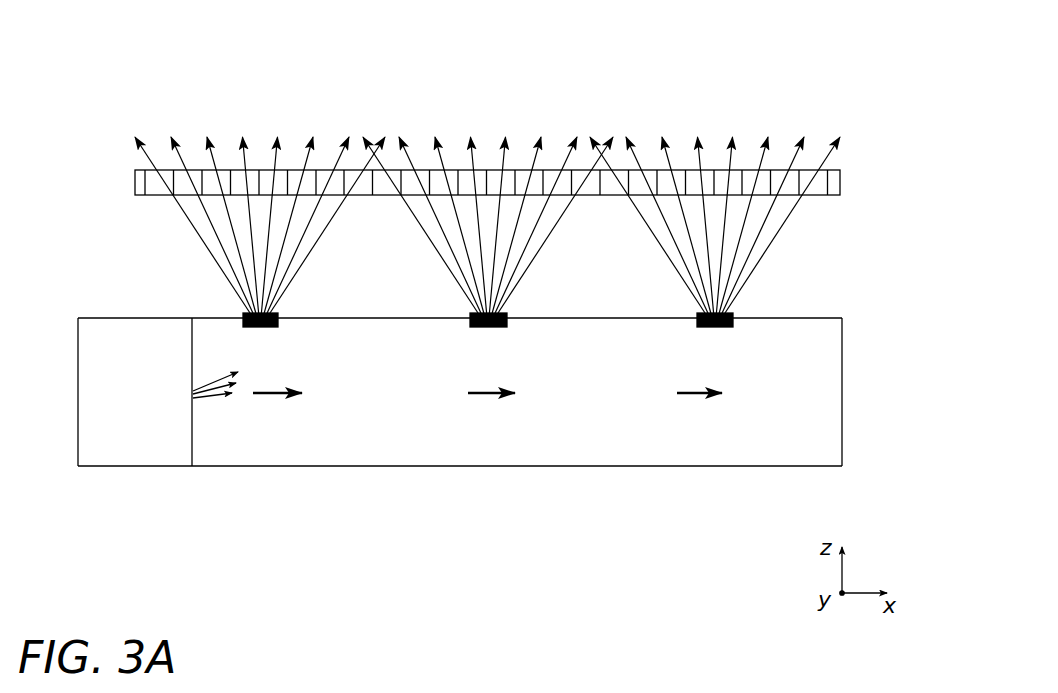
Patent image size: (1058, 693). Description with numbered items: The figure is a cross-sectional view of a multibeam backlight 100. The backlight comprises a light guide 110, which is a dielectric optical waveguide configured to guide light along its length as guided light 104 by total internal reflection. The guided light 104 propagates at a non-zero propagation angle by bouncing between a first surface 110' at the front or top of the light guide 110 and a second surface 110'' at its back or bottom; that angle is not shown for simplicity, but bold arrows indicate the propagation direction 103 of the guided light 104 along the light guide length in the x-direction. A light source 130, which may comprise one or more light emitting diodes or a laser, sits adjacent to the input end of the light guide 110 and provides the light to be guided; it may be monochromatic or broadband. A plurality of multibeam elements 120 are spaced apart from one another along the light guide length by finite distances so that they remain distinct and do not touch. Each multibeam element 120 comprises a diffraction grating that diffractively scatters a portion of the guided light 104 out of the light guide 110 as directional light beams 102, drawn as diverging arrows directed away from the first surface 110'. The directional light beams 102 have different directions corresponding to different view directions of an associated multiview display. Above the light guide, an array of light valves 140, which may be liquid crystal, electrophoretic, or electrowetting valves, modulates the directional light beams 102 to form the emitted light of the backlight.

The multibeam backlight 100 is at (135, 227).
The array of light valves 140 is at (122, 176).
The directional light beams 102 is at (843, 215).
The multibeam elements 120 is at (222, 293).
The light guide 110 is at (507, 410).
The first surface 110' is at (500, 299).
The second surface 110'' is at (502, 486).
The light source 130 is at (130, 478).
The guided light 104 is at (225, 435).
The propagation direction 103 is at (492, 413).